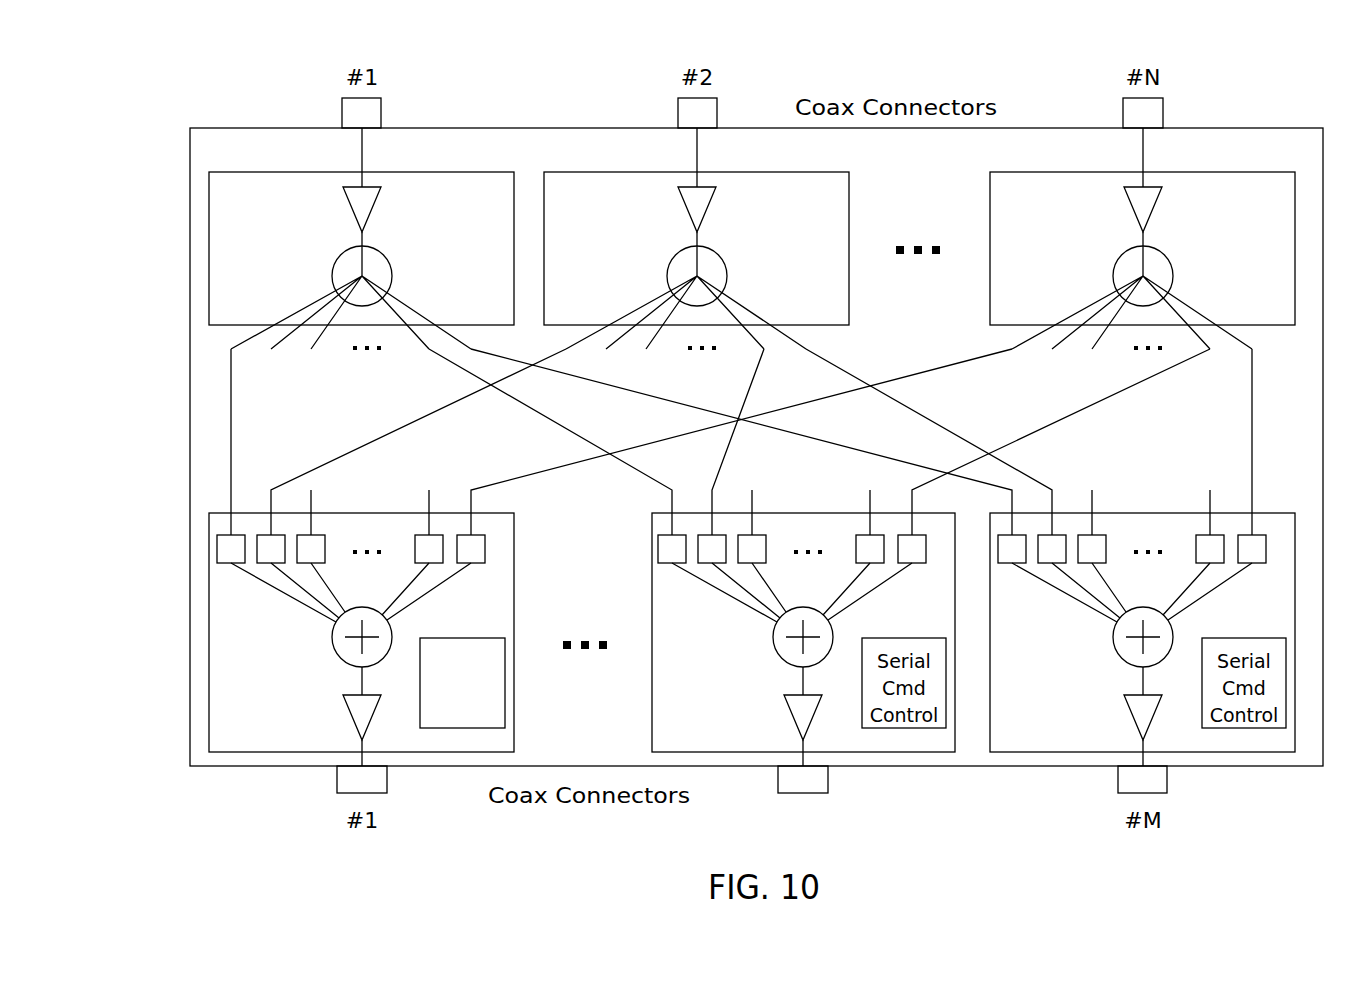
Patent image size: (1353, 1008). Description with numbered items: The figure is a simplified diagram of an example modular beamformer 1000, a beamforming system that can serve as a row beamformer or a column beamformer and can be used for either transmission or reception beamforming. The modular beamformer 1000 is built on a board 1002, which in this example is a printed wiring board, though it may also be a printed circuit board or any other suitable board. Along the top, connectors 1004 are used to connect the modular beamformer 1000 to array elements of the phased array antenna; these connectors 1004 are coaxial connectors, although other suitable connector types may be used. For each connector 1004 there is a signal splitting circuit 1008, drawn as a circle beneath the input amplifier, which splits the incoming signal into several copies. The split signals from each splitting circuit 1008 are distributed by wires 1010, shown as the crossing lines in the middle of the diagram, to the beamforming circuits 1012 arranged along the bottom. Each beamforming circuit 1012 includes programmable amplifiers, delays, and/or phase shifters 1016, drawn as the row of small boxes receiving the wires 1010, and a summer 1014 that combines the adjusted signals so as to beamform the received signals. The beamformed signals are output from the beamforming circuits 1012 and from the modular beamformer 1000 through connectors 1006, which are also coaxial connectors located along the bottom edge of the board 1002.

The modular beamformer 1000 is at (158, 65).
The board 1002 is at (198, 228).
The connectors 1004 is at (381, 100).
The connectors 1006 is at (337, 793).
The signal splitting circuit 1008 is at (248, 290).
The wires 1010 is at (230, 435).
The beamforming circuits 1012 is at (228, 617).
The summers 1014 is at (332, 640).
The programmable amplifiers, delays, and/or phase shifters 1016 is at (225, 550).